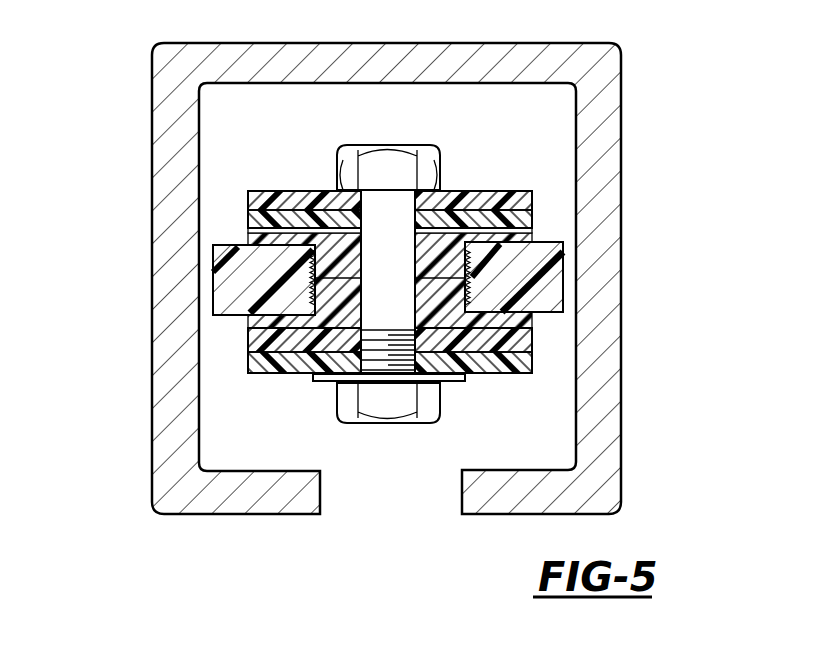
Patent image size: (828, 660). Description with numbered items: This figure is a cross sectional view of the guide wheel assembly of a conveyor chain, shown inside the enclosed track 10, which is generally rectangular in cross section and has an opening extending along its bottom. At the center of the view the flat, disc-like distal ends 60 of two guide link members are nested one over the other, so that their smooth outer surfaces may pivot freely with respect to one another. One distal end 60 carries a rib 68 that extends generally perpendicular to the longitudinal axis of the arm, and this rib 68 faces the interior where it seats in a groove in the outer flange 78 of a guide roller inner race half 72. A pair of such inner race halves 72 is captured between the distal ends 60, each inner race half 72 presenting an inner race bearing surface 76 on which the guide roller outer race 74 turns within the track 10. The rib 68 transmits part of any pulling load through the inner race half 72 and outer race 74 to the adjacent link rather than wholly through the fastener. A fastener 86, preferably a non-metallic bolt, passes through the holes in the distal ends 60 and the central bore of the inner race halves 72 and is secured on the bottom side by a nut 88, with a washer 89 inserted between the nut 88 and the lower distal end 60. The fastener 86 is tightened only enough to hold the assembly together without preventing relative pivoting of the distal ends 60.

The enclosed track 10 is at (150, 87).
The distal end 60 is at (248, 221).
The rib 68 is at (532, 210).
The guide roller inner race half 72 is at (533, 320).
The guide roller outer race 74 is at (567, 268).
The inner race bearing surface 76 is at (312, 283).
The outer flange 78 is at (532, 237).
The fastener 86 is at (437, 165).
The nut 88 is at (432, 424).
The washer 89 is at (462, 380).